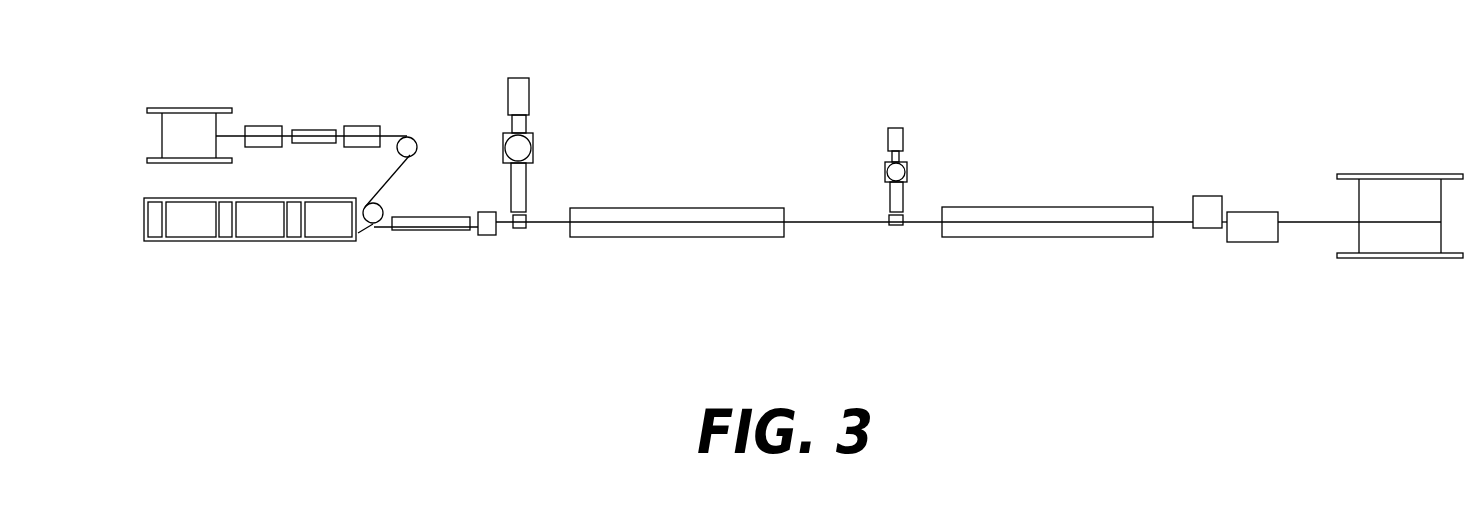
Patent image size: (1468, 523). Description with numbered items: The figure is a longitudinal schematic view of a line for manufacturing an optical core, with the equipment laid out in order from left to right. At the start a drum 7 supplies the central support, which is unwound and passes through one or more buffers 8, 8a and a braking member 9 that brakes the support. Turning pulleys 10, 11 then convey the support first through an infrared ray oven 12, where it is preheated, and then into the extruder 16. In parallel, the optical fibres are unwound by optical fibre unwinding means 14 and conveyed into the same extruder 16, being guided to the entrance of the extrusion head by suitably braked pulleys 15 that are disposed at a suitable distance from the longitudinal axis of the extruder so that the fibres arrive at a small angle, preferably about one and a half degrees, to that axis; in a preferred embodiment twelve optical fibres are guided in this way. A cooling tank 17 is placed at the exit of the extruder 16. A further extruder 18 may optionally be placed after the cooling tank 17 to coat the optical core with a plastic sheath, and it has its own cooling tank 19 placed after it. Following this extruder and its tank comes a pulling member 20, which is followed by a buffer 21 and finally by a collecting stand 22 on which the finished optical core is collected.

The drum 7 is at (182, 127).
The buffer 8 is at (267, 130).
The braking member 9 is at (308, 130).
The buffer 8a is at (363, 130).
The turning pulley 10 is at (412, 145).
The turning pulley 11 is at (362, 235).
The infrared ray oven 12 is at (433, 235).
The optical fibre unwinding means 14 is at (252, 225).
The pulleys 15 is at (483, 236).
The extruder 16 is at (519, 90).
The cooling tank 17 is at (648, 208).
The further extruder 18 is at (893, 136).
The cooling tank 19 is at (1015, 210).
The pulling member 20 is at (1204, 196).
The buffer 21 is at (1248, 242).
The collecting stand 22 is at (1388, 188).